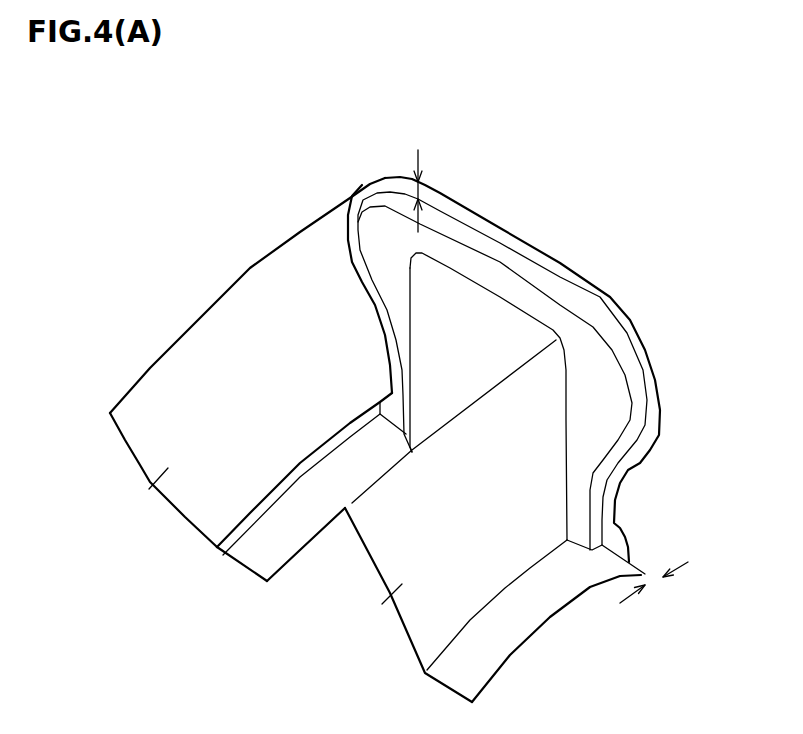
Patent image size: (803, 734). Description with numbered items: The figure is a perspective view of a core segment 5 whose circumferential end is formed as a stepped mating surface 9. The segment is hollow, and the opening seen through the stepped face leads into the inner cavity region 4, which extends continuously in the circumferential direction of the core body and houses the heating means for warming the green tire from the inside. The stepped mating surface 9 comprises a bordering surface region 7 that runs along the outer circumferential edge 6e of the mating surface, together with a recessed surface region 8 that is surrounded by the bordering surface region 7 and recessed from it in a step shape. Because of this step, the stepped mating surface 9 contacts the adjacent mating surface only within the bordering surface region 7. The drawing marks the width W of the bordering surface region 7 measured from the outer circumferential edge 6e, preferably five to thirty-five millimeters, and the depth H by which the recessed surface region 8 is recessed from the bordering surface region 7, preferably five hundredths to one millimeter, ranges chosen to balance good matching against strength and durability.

The inner cavity region 4 is at (515, 432).
The outer panel 5 is at (238, 241).
The outer circumferential edge 6e is at (380, 183).
The bordering surface region 7 is at (478, 329).
The recessed surface region 8 is at (512, 290).
The stepped mating surface 9 is at (486, 329).
The width W is at (421, 190).
The depth H is at (652, 582).